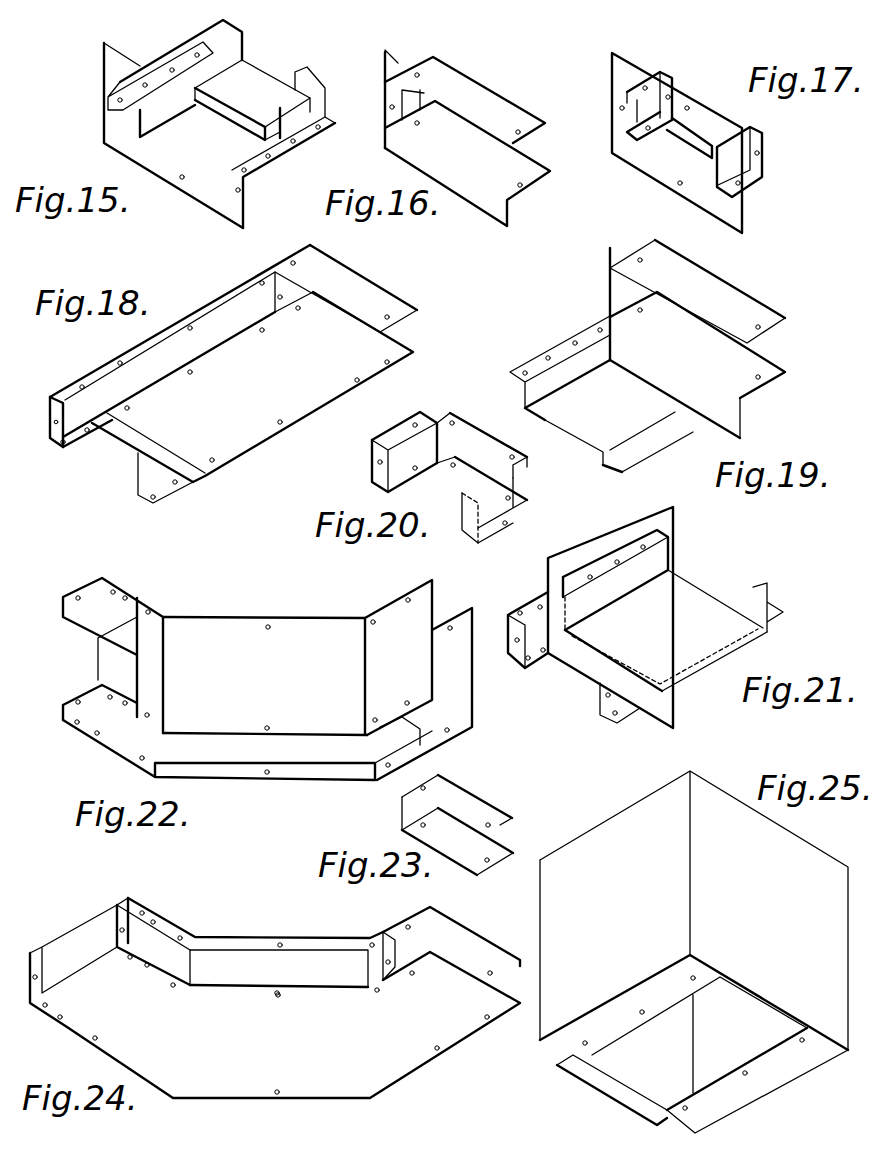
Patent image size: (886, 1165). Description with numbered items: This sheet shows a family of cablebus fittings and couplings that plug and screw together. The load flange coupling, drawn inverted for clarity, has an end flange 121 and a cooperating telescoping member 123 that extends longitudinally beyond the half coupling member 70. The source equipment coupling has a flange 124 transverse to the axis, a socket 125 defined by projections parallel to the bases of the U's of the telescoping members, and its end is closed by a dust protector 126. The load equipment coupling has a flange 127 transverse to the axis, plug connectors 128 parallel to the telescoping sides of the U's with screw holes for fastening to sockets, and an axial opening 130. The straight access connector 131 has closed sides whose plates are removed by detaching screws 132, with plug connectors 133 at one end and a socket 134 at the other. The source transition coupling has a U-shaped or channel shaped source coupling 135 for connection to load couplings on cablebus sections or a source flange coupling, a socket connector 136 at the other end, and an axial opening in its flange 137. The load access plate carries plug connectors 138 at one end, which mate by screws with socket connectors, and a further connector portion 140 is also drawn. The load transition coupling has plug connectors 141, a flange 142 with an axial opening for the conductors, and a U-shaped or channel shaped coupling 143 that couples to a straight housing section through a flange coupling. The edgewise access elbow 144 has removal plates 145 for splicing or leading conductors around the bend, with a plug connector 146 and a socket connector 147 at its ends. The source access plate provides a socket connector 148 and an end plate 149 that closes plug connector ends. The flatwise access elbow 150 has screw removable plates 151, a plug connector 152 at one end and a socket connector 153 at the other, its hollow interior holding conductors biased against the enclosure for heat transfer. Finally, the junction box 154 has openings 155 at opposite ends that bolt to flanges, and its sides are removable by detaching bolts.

In FIG. 15, the half coupling member 70 is at (253, 82).
In FIG. 15, the end flange 121 is at (108, 65).
In FIG. 15, the telescoping member 123 is at (192, 138).
In FIG. 15, the flange 124 is at (213, 163).
In FIG. 16, the flange 124 is at (395, 63).
In FIG. 18, the flange 124 is at (187, 246).
In FIG. 16, the socket 125 is at (445, 75).
In FIG. 16, the dust protector 126 is at (418, 102).
In FIG. 17, the flange 127 is at (657, 163).
In FIG. 17, the plug connectors 128 is at (672, 82).
In FIG. 17, the axial opening 130 is at (695, 152).
In FIG. 18, the straight access connector 131 is at (252, 397).
In FIG. 18, the screws 132 is at (187, 325).
In FIG. 18, the plug connectors 133 is at (67, 408).
In FIG. 18, the socket 134 is at (378, 302).
In FIG. 19, the source coupling 135 is at (572, 363).
In FIG. 19, the socket connector 136 is at (730, 303).
In FIG. 19, the flange 137 is at (733, 412).
In FIG. 20, the plug connectors 138 is at (393, 430).
In FIG. 20, the bracket 140 is at (477, 440).
In FIG. 21, the plug connectors 141 is at (540, 625).
In FIG. 21, the flange 142 is at (560, 567).
In FIG. 21, the coupling 143 is at (695, 595).
In FIG. 22, the edgewise access elbow 144 is at (228, 638).
In FIG. 22, the removal plates 145 is at (273, 787).
In FIG. 22, the plug connector 146 is at (90, 588).
In FIG. 22, the socket connector 147 is at (385, 628).
In FIG. 23, the socket connector 148 is at (477, 808).
In FIG. 23, the end plate 149 is at (413, 813).
In FIG. 24, the flatwise access elbow 150 is at (275, 1001).
In FIG. 24, the screw removable plates 151 is at (279, 915).
In FIG. 24, the plug connector 152 is at (117, 915).
In FIG. 24, the socket connector 153 is at (490, 923).
In FIG. 25, the junction box 154 is at (694, 910).
In FIG. 25, the openings 155 is at (702, 1054).